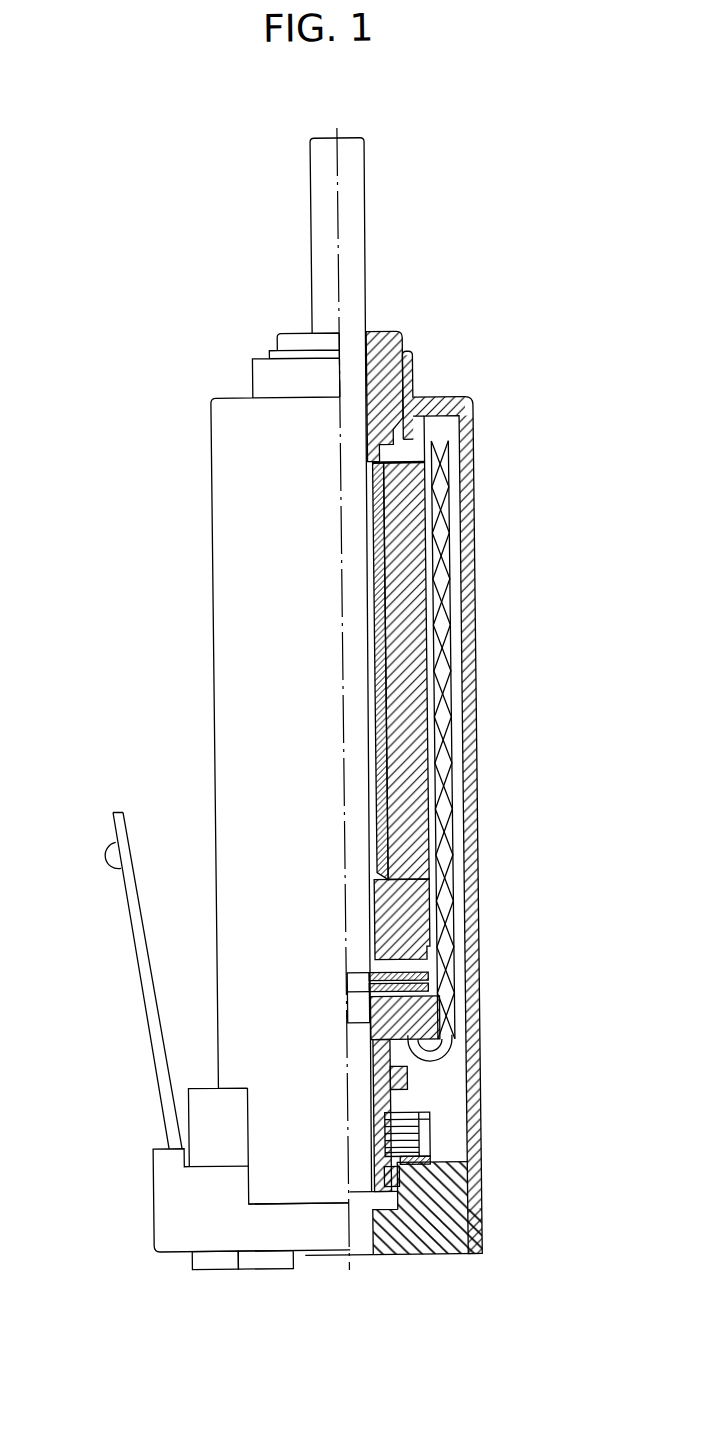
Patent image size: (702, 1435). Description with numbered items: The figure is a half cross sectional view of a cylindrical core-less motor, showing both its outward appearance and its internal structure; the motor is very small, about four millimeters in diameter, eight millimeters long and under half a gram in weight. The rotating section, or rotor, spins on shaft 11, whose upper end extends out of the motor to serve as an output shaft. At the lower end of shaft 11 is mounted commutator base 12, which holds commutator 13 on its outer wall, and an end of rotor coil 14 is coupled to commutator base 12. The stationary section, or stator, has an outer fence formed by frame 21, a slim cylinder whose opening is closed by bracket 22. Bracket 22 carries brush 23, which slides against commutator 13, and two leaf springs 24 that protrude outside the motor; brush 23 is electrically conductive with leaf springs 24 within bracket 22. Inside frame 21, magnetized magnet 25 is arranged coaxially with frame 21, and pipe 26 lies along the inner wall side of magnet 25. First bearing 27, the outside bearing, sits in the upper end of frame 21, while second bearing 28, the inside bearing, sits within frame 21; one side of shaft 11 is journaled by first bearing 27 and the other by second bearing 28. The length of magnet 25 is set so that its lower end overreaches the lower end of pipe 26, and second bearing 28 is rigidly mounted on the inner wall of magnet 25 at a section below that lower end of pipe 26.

The shaft 11 is at (355, 232).
The commutator base 12 is at (403, 1020).
The commutator 13 is at (379, 1107).
The rotor coil 14 is at (435, 842).
The frame 21 is at (223, 562).
The bracket 22 is at (151, 1215).
The brush 23 is at (412, 1138).
The leaf spring 24 is at (128, 937).
The magnet 25 is at (407, 628).
The pipe 26 is at (369, 700).
The first bearing 27 is at (388, 343).
The second bearing 28 is at (373, 915).